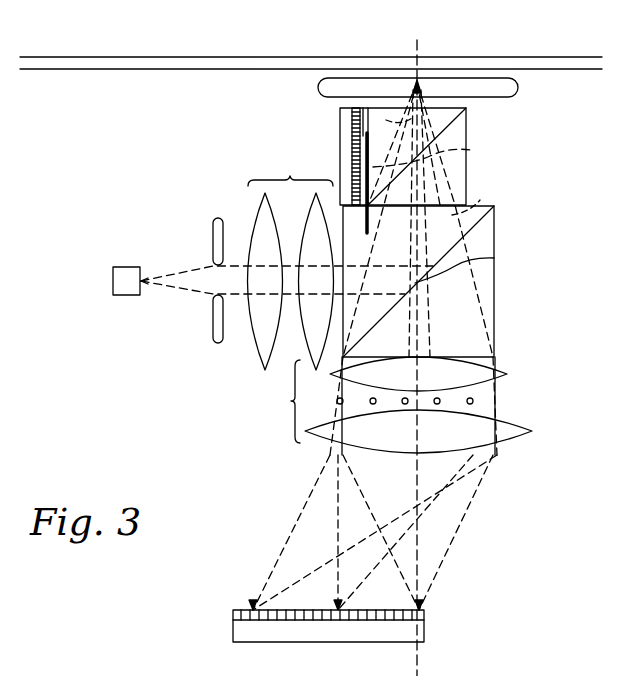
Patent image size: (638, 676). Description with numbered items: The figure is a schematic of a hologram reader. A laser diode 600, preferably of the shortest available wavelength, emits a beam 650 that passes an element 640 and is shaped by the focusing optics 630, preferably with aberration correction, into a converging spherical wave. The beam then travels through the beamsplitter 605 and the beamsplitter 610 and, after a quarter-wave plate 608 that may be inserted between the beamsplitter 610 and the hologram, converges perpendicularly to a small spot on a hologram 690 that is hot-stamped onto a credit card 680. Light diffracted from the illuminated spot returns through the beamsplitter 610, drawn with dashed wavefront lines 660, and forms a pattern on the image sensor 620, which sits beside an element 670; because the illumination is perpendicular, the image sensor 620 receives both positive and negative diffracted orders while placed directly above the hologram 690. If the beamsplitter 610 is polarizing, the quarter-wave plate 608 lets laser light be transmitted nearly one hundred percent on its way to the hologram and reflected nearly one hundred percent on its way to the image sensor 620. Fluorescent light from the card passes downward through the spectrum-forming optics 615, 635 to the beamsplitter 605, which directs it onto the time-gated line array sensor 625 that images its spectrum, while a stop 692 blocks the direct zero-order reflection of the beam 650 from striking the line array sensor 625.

The laser diode 600 is at (113, 280).
The beam 650 is at (172, 288).
The aperture 640 is at (213, 243).
The focusing optics 630 is at (290, 176).
The image sensor 620 is at (362, 132).
The grating 670 is at (352, 108).
The beamsplitter 610 is at (466, 127).
The second beamsplitter 605 is at (494, 232).
The quarter-wave plate 608 is at (518, 88).
The reflected wavefront 660 is at (470, 155).
The stop 692 is at (494, 262).
The spectrum-forming optics 615 is at (473, 401).
The spectrum-forming optics 635 is at (291, 401).
The time-gated line array sensor 625 is at (233, 630).
The credit card 680 is at (184, 57).
The hologram 690 is at (364, 69).